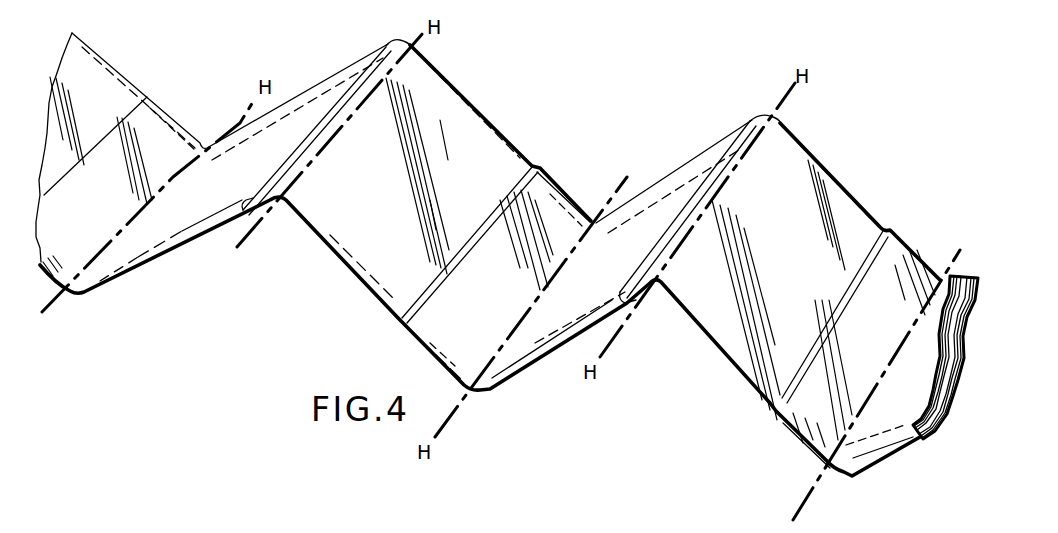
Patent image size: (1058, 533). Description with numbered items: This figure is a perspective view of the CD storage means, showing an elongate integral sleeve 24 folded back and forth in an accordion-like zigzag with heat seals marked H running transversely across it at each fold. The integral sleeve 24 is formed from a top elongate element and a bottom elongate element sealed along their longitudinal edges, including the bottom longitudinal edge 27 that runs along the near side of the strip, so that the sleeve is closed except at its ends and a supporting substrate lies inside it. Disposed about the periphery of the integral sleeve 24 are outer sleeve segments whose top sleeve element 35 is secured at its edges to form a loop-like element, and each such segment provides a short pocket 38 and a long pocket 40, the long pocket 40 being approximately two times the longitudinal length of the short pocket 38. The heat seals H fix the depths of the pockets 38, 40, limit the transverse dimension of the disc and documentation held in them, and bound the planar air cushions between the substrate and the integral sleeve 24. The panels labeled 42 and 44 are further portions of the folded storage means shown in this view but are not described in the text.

The integral sleeve 24 is at (367, 230).
The bottom longitudinal edge 27 is at (327, 244).
The top sleeve element 35 is at (246, 135).
The short pocket 38 is at (118, 114).
The long pocket 40 is at (366, 86).
The panel 42 is at (723, 348).
The panel 44 is at (833, 183).